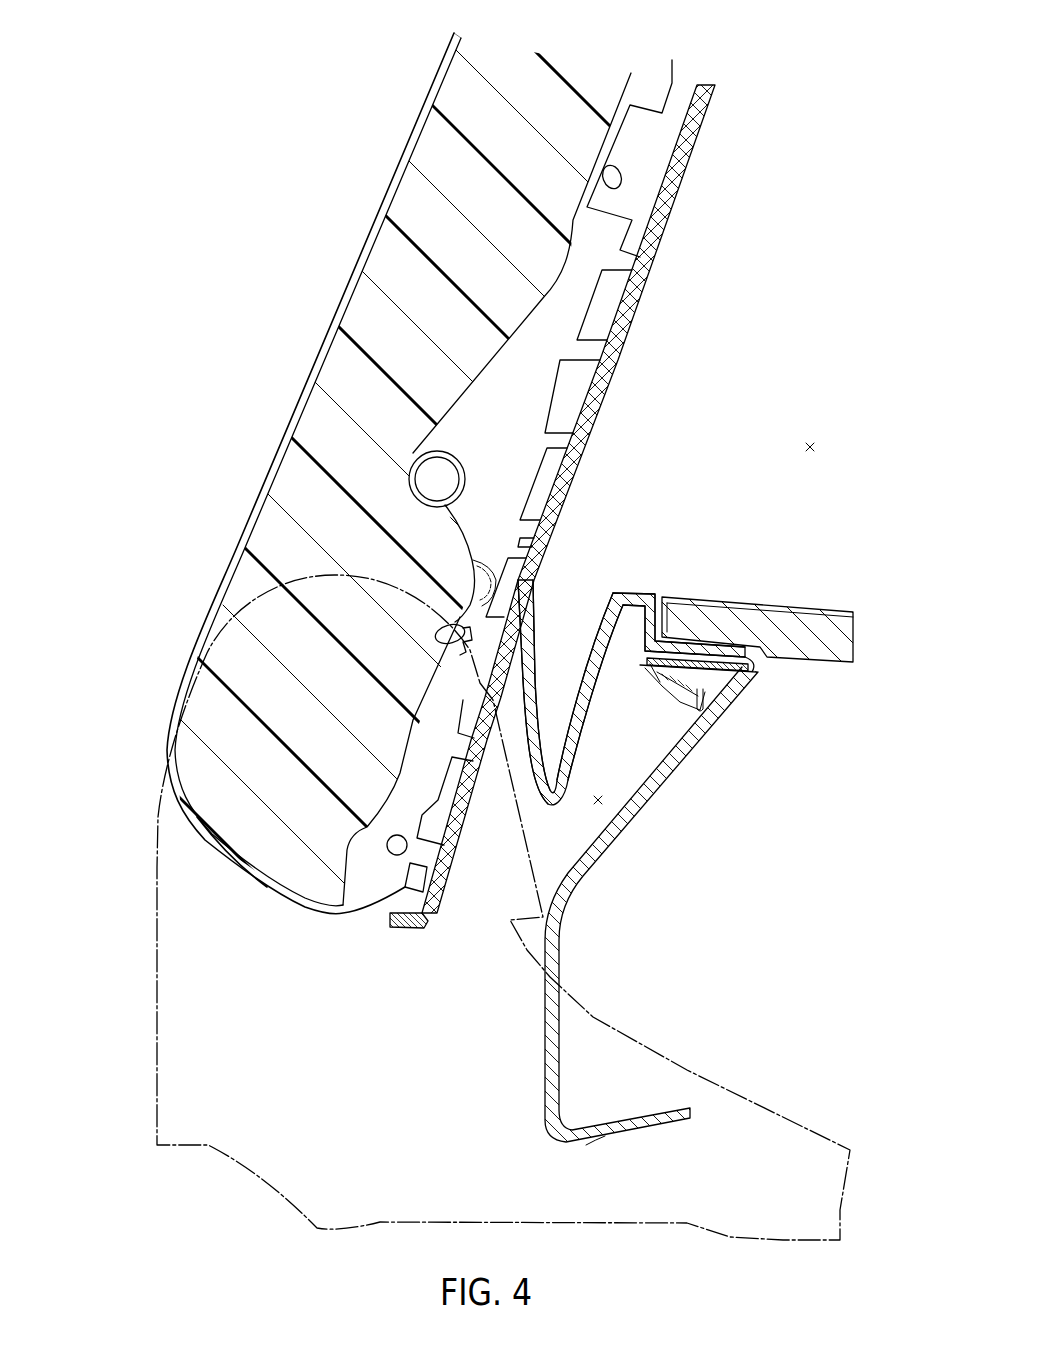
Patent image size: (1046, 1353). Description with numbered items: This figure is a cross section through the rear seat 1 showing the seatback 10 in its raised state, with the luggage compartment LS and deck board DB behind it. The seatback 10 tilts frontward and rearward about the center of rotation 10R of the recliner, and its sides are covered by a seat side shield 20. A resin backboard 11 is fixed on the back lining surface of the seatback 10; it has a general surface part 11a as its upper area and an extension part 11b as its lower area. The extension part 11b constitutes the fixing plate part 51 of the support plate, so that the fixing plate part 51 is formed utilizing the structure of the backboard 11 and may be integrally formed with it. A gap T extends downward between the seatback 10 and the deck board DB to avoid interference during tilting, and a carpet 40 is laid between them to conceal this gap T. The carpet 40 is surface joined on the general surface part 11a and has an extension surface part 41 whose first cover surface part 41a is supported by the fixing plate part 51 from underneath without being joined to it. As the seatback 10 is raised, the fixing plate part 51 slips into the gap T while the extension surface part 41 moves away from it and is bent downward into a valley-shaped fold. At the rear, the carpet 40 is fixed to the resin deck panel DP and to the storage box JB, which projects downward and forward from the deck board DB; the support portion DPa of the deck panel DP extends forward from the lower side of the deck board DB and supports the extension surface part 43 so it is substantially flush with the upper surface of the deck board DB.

The rear seat 1 is at (298, 29).
The seatback 10 is at (350, 157).
The center of rotation 10R is at (337, 717).
The backboard 11 is at (657, 220).
The general surface part 11a is at (633, 297).
The extension part 11b is at (452, 923).
The fixing plate part 51 is at (460, 833).
The seat side shield 20 is at (220, 1022).
The carpet 40 is at (625, 353).
The extension surface part 41 is at (631, 574).
The first cover surface part 41a is at (530, 712).
The extension surface part 43 is at (638, 590).
The luggage compartment LS is at (810, 446).
The deck board DB is at (826, 600).
The deck panel DP is at (690, 710).
The support portion DPa is at (640, 597).
The storage box JB is at (658, 790).
The gap T is at (598, 800).